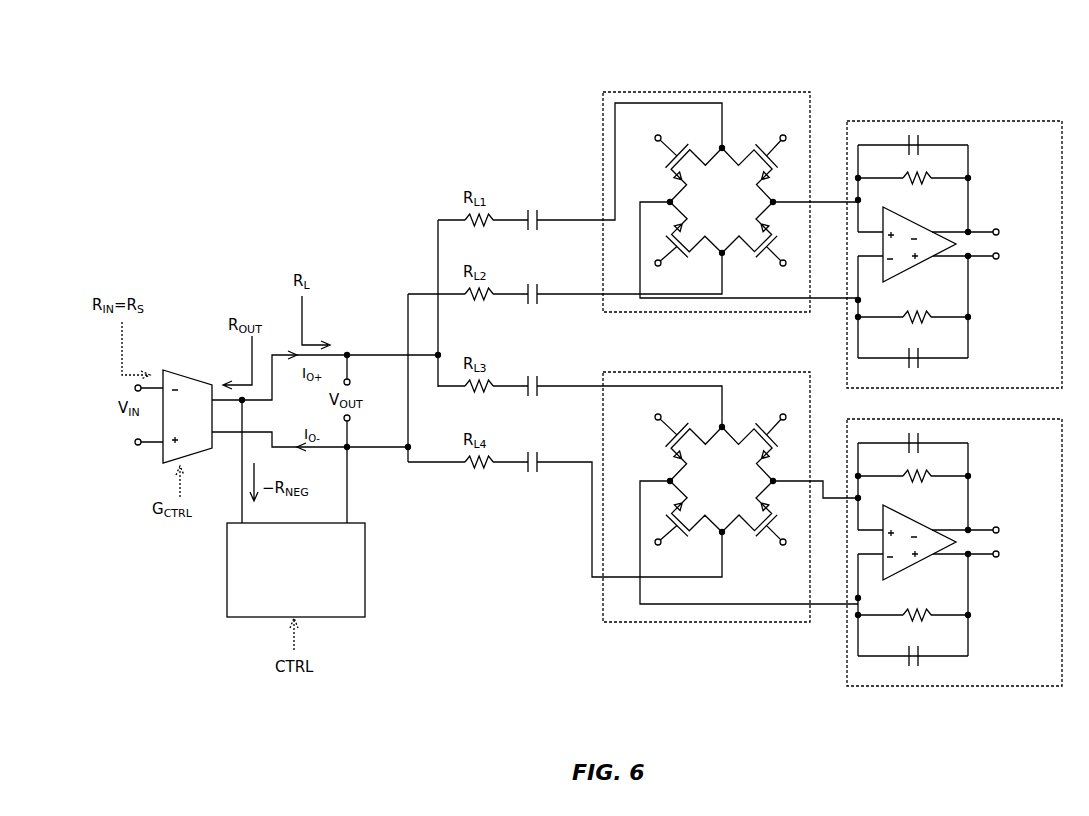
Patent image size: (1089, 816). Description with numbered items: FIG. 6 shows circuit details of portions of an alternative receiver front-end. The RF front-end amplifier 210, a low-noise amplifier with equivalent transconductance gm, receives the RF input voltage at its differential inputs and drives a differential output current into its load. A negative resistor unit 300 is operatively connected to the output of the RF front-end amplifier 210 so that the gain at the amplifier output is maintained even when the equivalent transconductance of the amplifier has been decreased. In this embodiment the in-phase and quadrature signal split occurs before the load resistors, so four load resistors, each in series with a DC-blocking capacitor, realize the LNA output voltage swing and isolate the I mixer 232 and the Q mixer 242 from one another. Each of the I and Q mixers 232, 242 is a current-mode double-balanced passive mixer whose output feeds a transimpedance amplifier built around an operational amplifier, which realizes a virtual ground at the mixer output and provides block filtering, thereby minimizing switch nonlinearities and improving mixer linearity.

The RF front-end amplifier 210 is at (185, 372).
The negative resistor unit 300 is at (284, 611).
The I mixer 232 is at (893, 60).
The Q mixer 242 is at (807, 723).